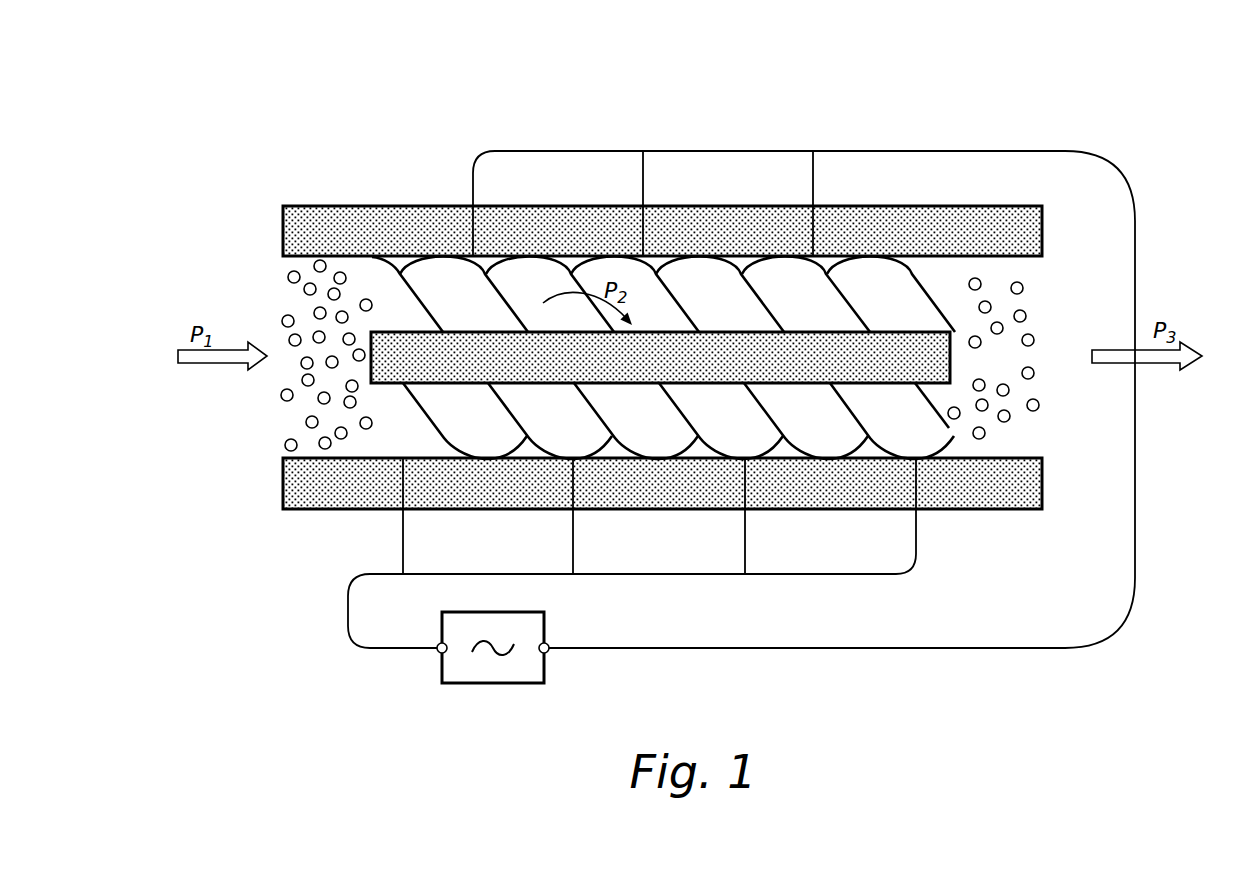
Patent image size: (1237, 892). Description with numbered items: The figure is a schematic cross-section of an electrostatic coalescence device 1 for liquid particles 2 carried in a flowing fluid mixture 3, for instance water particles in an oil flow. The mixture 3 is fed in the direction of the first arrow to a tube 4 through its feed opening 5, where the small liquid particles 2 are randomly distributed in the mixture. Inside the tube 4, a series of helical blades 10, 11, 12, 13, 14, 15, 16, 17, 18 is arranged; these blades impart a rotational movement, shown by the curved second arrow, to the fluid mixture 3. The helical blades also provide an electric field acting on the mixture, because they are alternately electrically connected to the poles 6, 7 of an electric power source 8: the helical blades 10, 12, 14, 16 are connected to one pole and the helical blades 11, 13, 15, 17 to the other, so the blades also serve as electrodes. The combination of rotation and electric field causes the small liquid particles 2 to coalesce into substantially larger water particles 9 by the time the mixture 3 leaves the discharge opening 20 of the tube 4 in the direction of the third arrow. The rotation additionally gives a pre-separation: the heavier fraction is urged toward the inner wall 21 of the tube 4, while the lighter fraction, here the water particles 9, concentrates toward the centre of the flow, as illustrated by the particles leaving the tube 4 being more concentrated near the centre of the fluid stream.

The electrostatic coalescence device 1 is at (1172, 121).
The liquid particles 2 is at (285, 446).
The fluid mixture 3 is at (332, 273).
The tube 4 is at (390, 212).
The feed opening 5 is at (280, 293).
The pole 6 is at (438, 652).
The pole 7 is at (548, 652).
The electric power source 8 is at (492, 684).
The water particles 9 is at (1034, 337).
The helical blade 10 is at (372, 456).
The helical blade 11 is at (440, 426).
The helical blade 12 is at (522, 426).
The helical blade 13 is at (608, 426).
The helical blade 14 is at (693, 425).
The helical blade 15 is at (780, 425).
The helical blade 16 is at (867, 425).
The helical blade 17 is at (840, 298).
The helical blade 18 is at (927, 297).
The discharge opening 20 is at (1032, 433).
The inner wall 21 is at (740, 262).